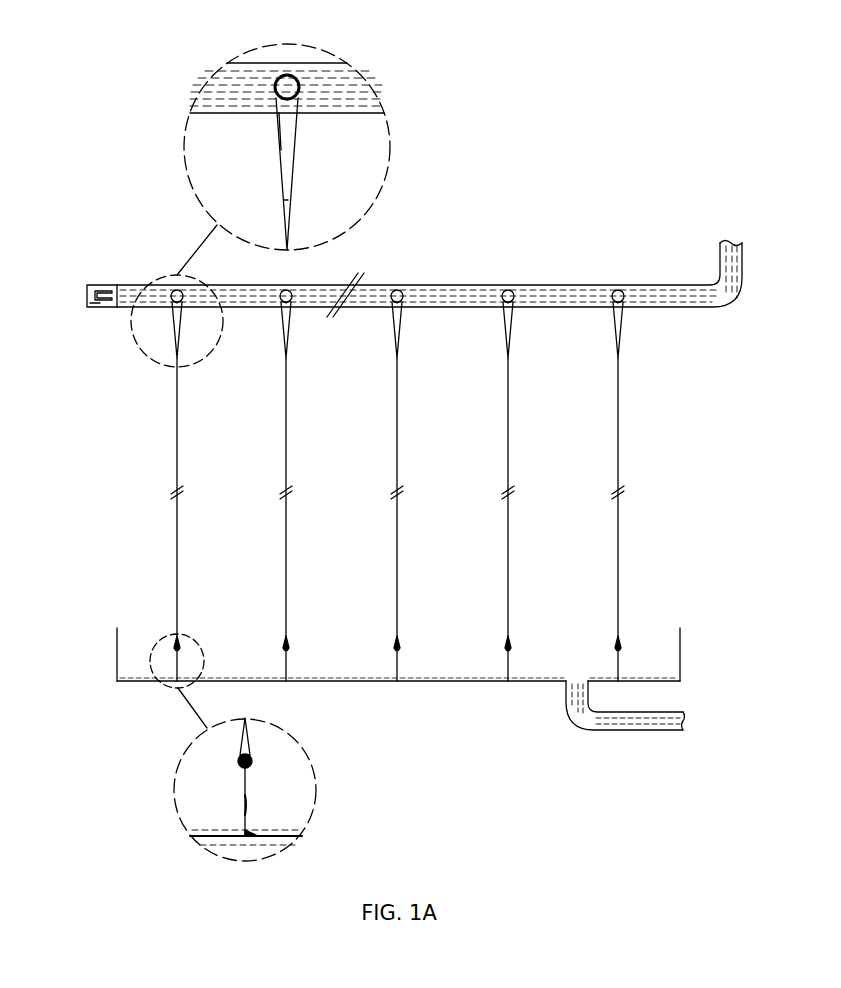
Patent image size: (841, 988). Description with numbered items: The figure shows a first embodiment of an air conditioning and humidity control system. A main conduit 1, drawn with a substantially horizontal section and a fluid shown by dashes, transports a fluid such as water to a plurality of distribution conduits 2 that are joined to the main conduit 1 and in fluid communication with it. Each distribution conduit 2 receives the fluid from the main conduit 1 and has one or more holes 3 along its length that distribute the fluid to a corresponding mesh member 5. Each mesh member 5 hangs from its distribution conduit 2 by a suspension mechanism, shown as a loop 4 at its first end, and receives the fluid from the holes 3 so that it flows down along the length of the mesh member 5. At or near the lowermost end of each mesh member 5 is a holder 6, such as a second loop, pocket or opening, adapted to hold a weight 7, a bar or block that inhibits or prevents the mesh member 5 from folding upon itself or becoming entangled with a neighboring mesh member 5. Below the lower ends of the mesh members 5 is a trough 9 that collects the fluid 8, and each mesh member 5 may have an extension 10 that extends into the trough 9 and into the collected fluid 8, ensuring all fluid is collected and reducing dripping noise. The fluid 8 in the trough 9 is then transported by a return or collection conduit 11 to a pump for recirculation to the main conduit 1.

The main conduit 1 is at (230, 113).
The distribution conduit 2 is at (292, 80).
The hole 3 is at (290, 100).
The loop 4 is at (276, 160).
The mesh member 5 is at (622, 436).
The holder 6 is at (252, 740).
The weight 7 is at (238, 762).
The fluid 8 is at (344, 679).
The trough 9 is at (682, 642).
The extension 10 is at (284, 667).
The return or collection conduit 11 is at (622, 732).